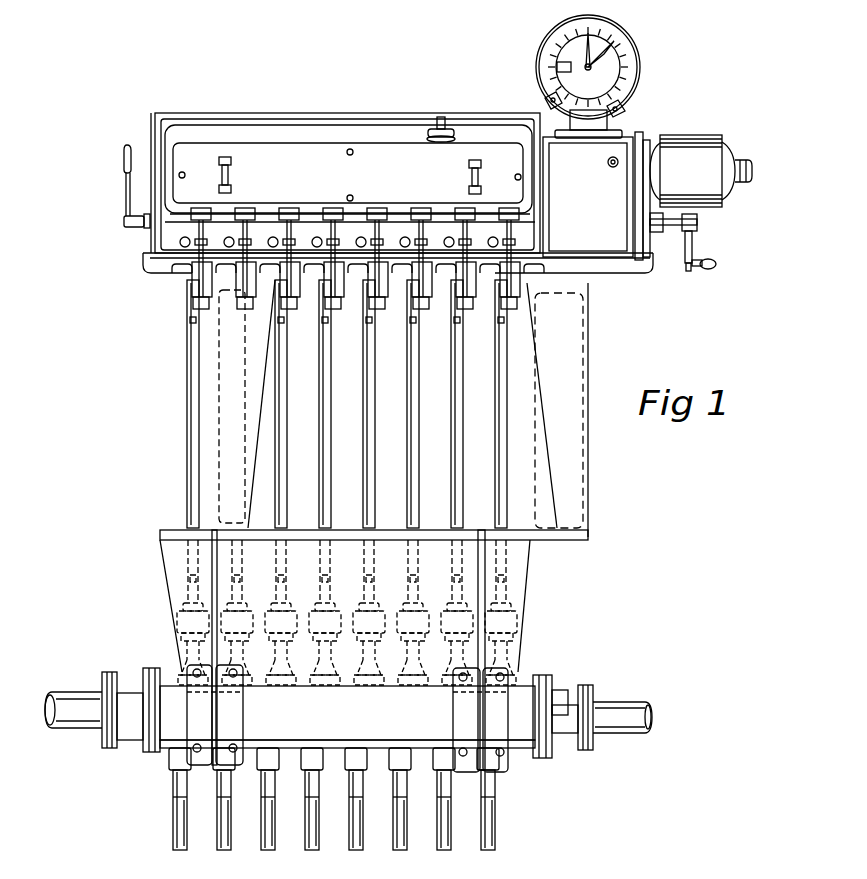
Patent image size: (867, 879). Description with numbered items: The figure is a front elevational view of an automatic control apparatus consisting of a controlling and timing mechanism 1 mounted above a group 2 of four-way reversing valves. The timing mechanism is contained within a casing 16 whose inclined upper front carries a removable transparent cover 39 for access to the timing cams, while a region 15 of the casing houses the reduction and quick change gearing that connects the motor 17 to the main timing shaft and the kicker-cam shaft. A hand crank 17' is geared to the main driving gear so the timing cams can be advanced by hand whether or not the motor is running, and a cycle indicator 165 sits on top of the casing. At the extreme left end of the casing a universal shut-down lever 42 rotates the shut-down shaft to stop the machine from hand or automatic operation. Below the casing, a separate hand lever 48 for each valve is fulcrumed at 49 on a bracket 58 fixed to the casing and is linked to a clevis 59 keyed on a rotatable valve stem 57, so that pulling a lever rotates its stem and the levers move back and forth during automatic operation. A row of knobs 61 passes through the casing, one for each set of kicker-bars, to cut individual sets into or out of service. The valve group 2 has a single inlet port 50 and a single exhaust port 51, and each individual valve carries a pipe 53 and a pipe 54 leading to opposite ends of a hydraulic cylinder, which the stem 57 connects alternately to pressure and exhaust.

The controlling and timing mechanism 1 is at (378, 158).
The group of four-way reversing valves 2 is at (347, 718).
The region of the casing 15 is at (596, 196).
The casing 16 is at (434, 122).
The motor 17 is at (701, 153).
The hand crank 17' is at (683, 269).
The transparent cover 39 is at (348, 173).
The universal shut-down lever 42 is at (122, 202).
The hand lever 48 is at (381, 212).
The fulcrum 49 is at (436, 310).
The inlet port 50 is at (78, 724).
The exhaust port 51 is at (622, 720).
The pipe 53 is at (217, 786).
The pipe 54 is at (217, 847).
The rotatable valve stem 57 is at (377, 424).
The bracket 58 is at (478, 285).
The clevis 59 is at (406, 303).
The knob 61 is at (182, 246).
The cycle indicator 165 is at (544, 45).